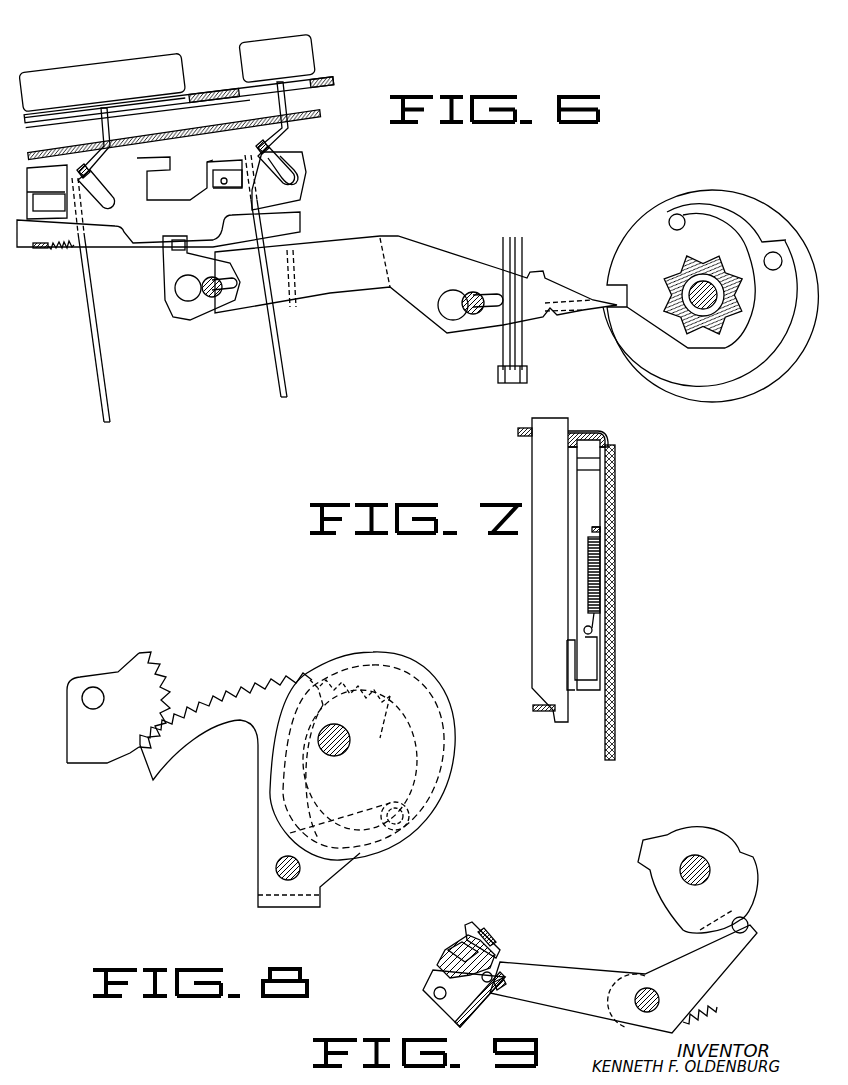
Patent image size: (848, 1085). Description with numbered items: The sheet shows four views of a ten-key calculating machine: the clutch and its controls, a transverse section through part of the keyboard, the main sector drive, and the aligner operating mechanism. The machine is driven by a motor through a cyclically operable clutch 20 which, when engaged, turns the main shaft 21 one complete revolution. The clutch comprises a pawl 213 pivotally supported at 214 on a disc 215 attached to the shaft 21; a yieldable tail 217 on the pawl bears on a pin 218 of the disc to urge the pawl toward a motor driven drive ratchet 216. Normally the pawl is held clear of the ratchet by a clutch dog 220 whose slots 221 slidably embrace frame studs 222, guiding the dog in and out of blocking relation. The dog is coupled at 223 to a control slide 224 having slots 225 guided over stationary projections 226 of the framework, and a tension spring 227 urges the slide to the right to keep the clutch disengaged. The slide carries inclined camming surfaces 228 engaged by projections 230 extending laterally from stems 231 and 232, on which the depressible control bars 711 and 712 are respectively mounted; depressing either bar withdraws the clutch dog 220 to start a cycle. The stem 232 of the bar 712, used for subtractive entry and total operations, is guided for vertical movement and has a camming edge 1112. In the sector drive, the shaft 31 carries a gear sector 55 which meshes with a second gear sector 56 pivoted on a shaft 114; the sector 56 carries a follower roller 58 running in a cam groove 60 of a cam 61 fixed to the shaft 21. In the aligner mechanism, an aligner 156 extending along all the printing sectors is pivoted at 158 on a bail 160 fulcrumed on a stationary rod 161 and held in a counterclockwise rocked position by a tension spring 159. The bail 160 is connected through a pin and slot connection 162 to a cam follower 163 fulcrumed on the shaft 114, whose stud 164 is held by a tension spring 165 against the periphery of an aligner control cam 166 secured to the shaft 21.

In FIG. 6, the control bar 711 is at (90, 72).
In FIG. 6, the control bar 712 is at (272, 70).
In FIG. 6, the inclined camming surfaces 228 is at (78, 165).
In FIG. 6, the projections 230 is at (100, 172).
In FIG. 6, the stationary projections 226 is at (200, 176).
In FIG. 6, the slots 225 is at (225, 181).
In FIG. 6, the control slide 224 is at (302, 198).
In FIG. 6, the tension spring 227 is at (55, 250).
In FIG. 6, the stem 231 is at (94, 316).
In FIG. 6, the stem 232 is at (270, 336).
In FIG. 7, the stem 232 is at (532, 616).
In FIG. 6, the coupling 223 is at (165, 262).
In FIG. 6, the frame studs 222 is at (214, 298).
In FIG. 6, the slots 221 is at (224, 278).
In FIG. 6, the clutch dog 220 is at (584, 312).
In FIG. 6, the clutch 20 is at (707, 296).
In FIG. 6, the pawl 213 is at (750, 360).
In FIG. 6, the pivot 214 is at (774, 252).
In FIG. 6, the disc 215 is at (748, 205).
In FIG. 6, the drive ratchet 216 is at (668, 266).
In FIG. 6, the yieldable tail 217 is at (706, 195).
In FIG. 6, the pin 218 is at (670, 214).
In FIG. 6, the main shaft 21 is at (703, 280).
In FIG. 8, the main shaft 21 is at (347, 748).
In FIG. 9, the main shaft 21 is at (698, 855).
In FIG. 7, the camming edge 1112 is at (530, 688).
In FIG. 8, the shaft 31 is at (82, 678).
In FIG. 8, the gear sector 55 is at (118, 670).
In FIG. 8, the second gear sector 56 is at (240, 684).
In FIG. 8, the follower roller 58 is at (412, 826).
In FIG. 8, the cam groove 60 is at (450, 712).
In FIG. 8, the cam 61 is at (445, 686).
In FIG. 8, the shaft 114 is at (276, 869).
In FIG. 9, the shaft 114 is at (636, 1008).
In FIG. 9, the aligner 156 is at (498, 930).
In FIG. 9, the pivot 158 is at (456, 948).
In FIG. 9, the tension spring 159 is at (488, 1000).
In FIG. 9, the bail 160 is at (430, 1012).
In FIG. 9, the stationary rod 161 is at (433, 991).
In FIG. 9, the pin and slot connection 162 is at (508, 960).
In FIG. 9, the cam follower 163 is at (594, 972).
In FIG. 9, the stud 164 is at (747, 920).
In FIG. 9, the tension spring 165 is at (712, 1003).
In FIG. 9, the aligner control cam 166 is at (745, 856).